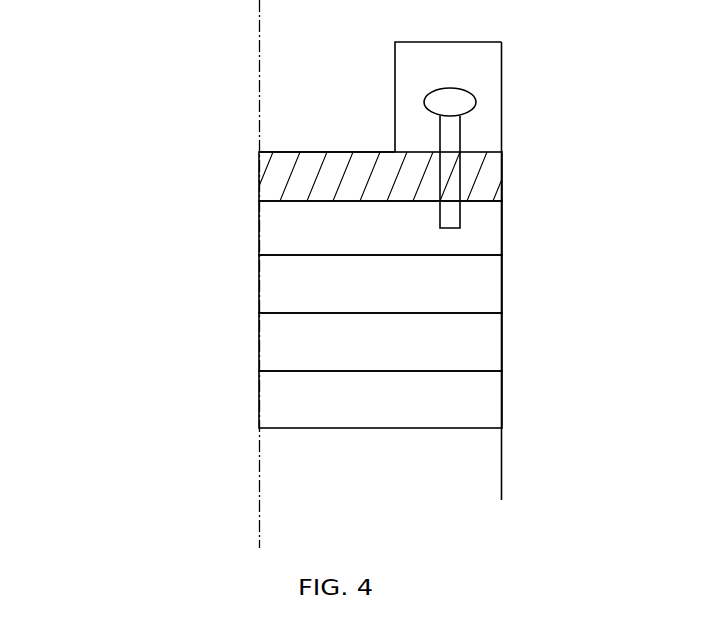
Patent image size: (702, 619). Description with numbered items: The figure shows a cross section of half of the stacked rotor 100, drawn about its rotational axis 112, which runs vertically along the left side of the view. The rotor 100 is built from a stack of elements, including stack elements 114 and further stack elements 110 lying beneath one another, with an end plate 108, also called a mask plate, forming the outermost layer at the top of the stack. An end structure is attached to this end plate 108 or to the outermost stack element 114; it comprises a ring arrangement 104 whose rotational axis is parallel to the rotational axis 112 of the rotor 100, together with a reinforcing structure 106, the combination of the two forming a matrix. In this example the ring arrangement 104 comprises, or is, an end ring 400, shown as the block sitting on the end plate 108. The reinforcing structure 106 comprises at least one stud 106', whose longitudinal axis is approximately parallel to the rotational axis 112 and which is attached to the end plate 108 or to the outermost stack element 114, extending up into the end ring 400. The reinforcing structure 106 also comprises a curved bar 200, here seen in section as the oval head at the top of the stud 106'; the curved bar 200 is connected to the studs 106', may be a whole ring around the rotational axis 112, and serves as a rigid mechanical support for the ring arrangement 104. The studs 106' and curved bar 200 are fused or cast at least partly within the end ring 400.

The stacked rotor 100 is at (193, 167).
The ring arrangement 104 is at (495, 97).
The end ring 400 is at (502, 78).
The reinforcing structure 106 is at (327, 77).
The stud 106' is at (428, 185).
The end plate 108 is at (502, 173).
The semiconductor layers 110 is at (357, 298).
The rotational axis 112 is at (260, 476).
The stack element 114 is at (357, 244).
The curved bar 200 is at (445, 88).